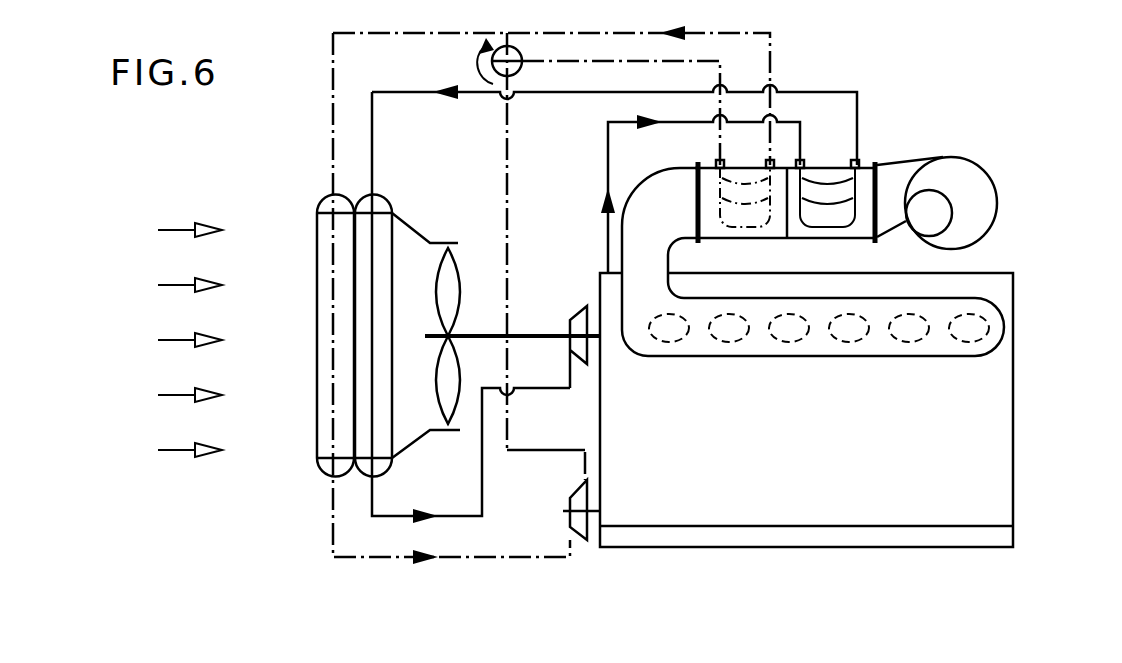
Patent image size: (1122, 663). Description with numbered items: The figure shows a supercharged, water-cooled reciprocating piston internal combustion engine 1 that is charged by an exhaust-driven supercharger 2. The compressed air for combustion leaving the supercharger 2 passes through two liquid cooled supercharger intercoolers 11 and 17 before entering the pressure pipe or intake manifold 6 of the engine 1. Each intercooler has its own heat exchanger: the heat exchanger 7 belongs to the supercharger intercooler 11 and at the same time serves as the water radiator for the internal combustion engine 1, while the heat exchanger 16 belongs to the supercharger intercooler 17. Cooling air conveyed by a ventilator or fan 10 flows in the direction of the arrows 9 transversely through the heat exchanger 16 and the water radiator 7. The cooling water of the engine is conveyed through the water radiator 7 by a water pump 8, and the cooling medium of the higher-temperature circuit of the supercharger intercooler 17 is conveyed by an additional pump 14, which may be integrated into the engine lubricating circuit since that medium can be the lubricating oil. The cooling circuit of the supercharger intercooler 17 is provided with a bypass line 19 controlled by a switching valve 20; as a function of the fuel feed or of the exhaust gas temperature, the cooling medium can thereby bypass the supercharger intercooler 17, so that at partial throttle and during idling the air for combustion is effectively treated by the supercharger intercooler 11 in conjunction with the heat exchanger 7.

The internal combustion engine 1 is at (990, 427).
The exhaust-driven supercharger 2 is at (963, 172).
The intake manifold 6 is at (953, 308).
The water radiator 7 is at (373, 336).
The water pump 8 is at (575, 315).
The arrows 9 is at (208, 222).
The fan 10 is at (450, 270).
The liquid cooled supercharger intercooler 11 is at (815, 176).
The pump 14 is at (578, 517).
The heat exchanger 16 is at (327, 277).
The liquid cooled supercharger intercooler 17 is at (747, 177).
The bypass line 19 is at (500, 33).
The switching valve 20 is at (518, 52).